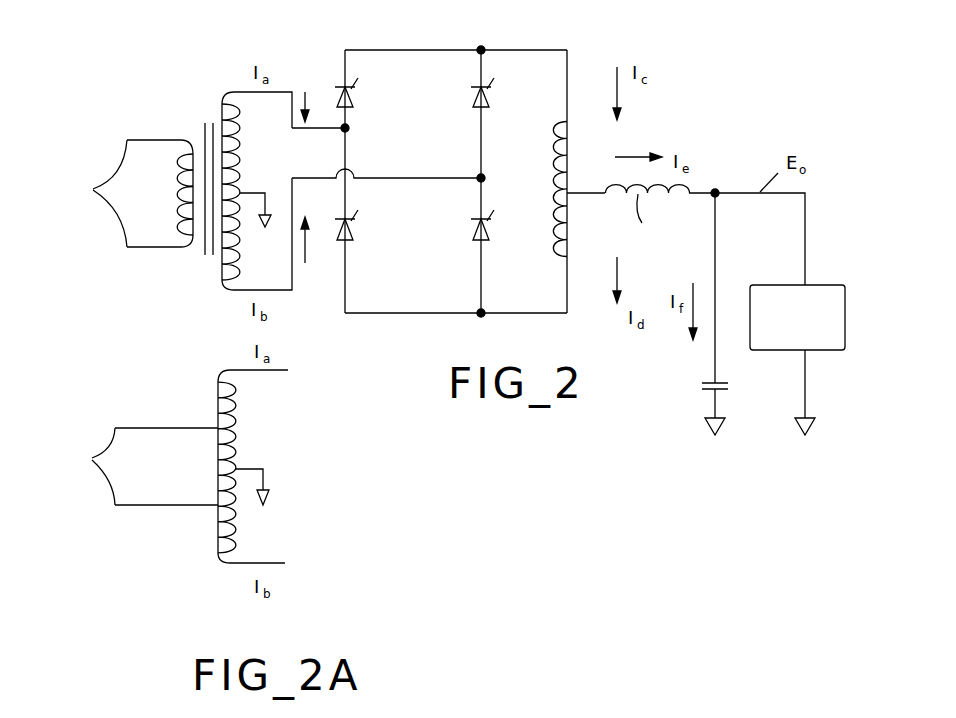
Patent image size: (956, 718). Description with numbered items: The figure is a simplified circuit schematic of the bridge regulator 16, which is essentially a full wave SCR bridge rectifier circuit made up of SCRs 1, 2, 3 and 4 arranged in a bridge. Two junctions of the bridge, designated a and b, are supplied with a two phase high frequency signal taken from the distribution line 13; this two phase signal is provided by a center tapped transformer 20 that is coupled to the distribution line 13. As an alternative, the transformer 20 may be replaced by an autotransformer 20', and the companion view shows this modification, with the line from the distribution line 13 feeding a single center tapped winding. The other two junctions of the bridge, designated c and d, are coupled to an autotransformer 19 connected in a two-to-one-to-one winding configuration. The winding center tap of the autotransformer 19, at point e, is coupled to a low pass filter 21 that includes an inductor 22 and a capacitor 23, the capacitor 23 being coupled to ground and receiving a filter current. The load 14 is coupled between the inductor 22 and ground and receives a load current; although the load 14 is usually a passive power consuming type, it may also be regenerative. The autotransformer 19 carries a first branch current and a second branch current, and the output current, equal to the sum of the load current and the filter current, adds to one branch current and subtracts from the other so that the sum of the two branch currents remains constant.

In FIG. 2, the SCR 1 is at (356, 94).
In FIG. 2, the SCR 2 is at (470, 94).
In FIG. 2, the SCR 3 is at (468, 225).
In FIG. 2, the SCR 4 is at (357, 225).
In FIG. 2, the distribution line 13 is at (94, 193).
In FIG. 2A, the distribution line 13 is at (140, 466).
In FIG. 2, the load 14 is at (780, 283).
In FIG. 2, the bridge regulator 16 is at (429, 165).
In FIG. 2, the autotransformer 19 is at (545, 151).
In FIG. 2, the center tapped transformer 20 is at (209, 164).
In FIG. 2A, the autotransformer 20' is at (291, 466).
In FIG. 2, the low pass filter 21 is at (710, 156).
In FIG. 2, the inductor 22 is at (648, 213).
In FIG. 2, the capacitor 23 is at (730, 387).